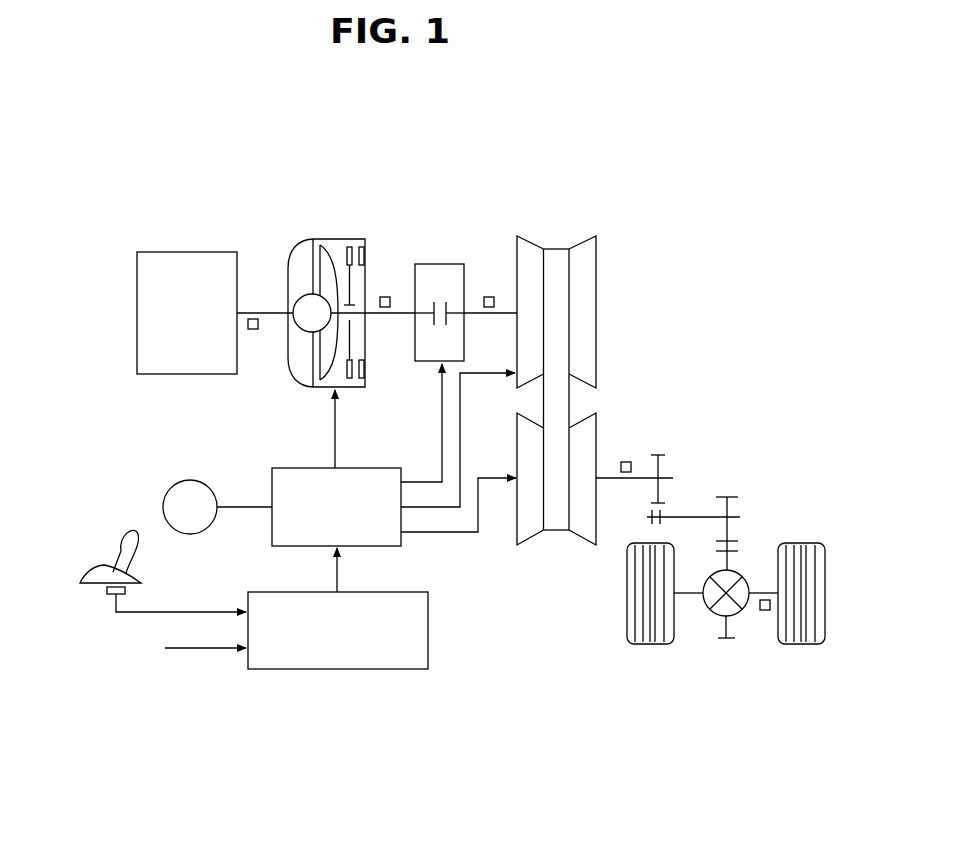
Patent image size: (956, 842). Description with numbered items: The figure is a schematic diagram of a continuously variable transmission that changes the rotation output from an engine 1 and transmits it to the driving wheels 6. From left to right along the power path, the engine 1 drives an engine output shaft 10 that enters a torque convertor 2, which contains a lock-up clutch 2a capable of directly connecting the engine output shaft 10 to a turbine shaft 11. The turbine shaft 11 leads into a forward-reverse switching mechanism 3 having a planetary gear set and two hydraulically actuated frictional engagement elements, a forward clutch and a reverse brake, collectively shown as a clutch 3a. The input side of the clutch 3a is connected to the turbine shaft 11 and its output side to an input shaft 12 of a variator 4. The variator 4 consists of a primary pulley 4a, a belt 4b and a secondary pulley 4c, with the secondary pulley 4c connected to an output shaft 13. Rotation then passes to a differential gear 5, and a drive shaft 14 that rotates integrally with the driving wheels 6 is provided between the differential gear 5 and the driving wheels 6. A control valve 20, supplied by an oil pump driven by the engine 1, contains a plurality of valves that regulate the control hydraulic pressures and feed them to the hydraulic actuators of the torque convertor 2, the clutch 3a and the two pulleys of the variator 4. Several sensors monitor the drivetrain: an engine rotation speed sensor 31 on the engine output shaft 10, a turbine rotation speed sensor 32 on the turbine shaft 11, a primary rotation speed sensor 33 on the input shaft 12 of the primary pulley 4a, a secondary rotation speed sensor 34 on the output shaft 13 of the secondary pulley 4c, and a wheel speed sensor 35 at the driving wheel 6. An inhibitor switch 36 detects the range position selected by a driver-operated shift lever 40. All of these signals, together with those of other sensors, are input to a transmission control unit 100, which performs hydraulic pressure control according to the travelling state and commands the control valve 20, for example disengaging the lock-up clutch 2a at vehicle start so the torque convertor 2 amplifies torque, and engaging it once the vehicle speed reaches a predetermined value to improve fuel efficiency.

The engine 1 is at (162, 252).
The torque convertor 2 is at (339, 279).
The lock-up clutch 2a is at (357, 232).
The forward-reverse switching mechanism 3 is at (445, 278).
The clutch 3a is at (442, 286).
The variator 4 is at (592, 364).
The primary pulley 4a is at (602, 287).
The belt 4b is at (556, 243).
The secondary pulley 4c is at (604, 418).
The differential gear 5 is at (709, 612).
The driving wheels 6 is at (806, 543).
The engine output shaft 10 is at (273, 312).
The turbine shaft 11 is at (395, 316).
The input shaft 12 is at (492, 317).
The output shaft 13 is at (636, 481).
The drive shaft 14 is at (748, 589).
The control valve 20 is at (296, 468).
The engine rotation speed sensor 31 is at (254, 331).
The turbine rotation speed sensor 32 is at (386, 296).
The primary rotation speed sensor 33 is at (490, 296).
The secondary rotation speed sensor 34 is at (627, 461).
The wheel speed sensor 35 is at (765, 612).
The inhibitor switch 36 is at (106, 590).
The shift lever 40 is at (118, 548).
The transmission control unit (ATCU) 100 is at (407, 592).